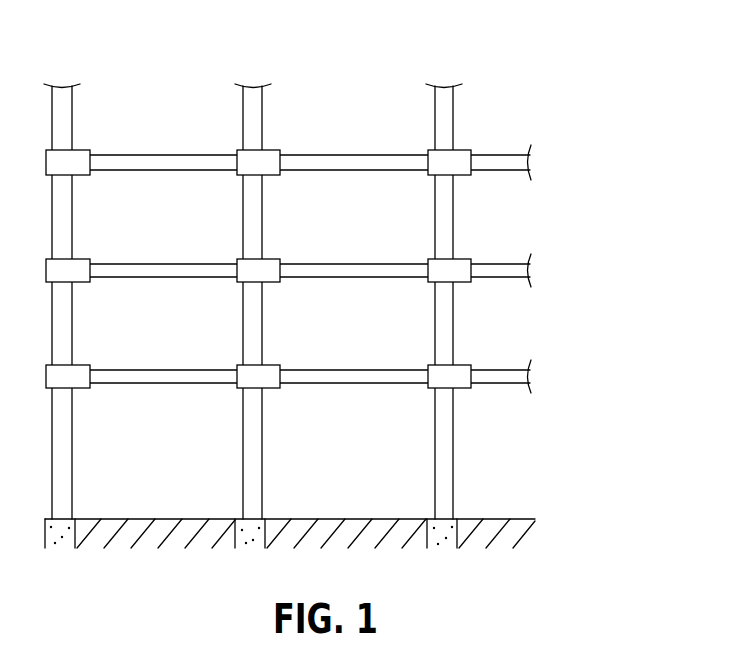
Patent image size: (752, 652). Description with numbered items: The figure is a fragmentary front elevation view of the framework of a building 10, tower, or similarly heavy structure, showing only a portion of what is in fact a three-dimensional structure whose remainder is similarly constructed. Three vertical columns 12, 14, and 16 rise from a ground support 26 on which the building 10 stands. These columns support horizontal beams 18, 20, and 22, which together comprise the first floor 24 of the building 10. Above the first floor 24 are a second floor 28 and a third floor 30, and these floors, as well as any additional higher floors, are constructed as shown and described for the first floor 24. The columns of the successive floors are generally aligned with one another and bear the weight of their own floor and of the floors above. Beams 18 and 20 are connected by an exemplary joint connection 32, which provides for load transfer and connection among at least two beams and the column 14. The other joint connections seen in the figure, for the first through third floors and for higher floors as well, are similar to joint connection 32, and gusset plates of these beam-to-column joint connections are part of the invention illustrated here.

The building 10 is at (323, 80).
The column 12 is at (85, 216).
The column 14 is at (275, 233).
The column 16 is at (475, 216).
The beam 18 is at (117, 366).
The beam 20 is at (320, 365).
The beam 22 is at (465, 363).
The first floor 24 is at (540, 377).
The ground support 26 is at (313, 513).
The second floor 28 is at (543, 270).
The third floor 30 is at (543, 161).
The joint connection 32 is at (276, 174).